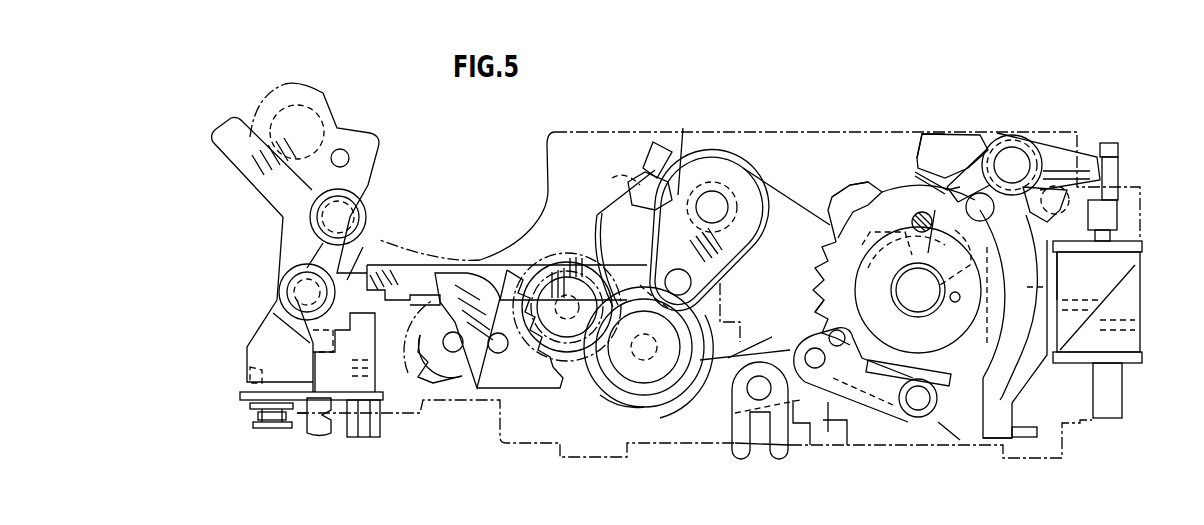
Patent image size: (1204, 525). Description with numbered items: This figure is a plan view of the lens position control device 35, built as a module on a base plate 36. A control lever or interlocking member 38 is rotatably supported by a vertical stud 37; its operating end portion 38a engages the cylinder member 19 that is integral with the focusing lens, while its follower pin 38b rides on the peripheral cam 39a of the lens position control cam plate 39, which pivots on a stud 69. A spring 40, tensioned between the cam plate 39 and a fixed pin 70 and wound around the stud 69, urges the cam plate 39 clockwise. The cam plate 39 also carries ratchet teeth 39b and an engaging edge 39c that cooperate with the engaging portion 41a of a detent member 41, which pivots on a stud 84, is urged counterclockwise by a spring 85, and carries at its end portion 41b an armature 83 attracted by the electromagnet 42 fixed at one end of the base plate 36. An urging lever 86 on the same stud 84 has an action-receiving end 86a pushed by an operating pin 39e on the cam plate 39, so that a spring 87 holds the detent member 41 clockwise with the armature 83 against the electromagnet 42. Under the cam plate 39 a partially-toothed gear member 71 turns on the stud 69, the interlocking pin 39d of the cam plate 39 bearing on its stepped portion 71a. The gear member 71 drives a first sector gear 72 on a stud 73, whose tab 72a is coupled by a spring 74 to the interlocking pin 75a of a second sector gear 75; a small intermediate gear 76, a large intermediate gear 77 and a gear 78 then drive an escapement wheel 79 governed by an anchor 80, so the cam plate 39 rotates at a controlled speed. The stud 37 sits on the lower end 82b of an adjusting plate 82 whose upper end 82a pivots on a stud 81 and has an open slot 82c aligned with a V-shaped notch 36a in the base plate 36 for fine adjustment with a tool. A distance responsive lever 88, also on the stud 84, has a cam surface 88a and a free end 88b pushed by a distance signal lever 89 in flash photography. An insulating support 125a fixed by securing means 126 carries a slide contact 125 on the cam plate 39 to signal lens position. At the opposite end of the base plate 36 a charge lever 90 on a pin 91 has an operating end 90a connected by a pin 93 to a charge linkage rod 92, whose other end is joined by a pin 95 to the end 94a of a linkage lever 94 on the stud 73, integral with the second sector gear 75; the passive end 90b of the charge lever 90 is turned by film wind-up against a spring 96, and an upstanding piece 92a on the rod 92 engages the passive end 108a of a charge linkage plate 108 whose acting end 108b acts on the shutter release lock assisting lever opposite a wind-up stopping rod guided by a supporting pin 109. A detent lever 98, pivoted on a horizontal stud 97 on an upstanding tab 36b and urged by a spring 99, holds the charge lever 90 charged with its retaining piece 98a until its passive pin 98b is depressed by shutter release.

The cylinder member 19 is at (738, 325).
The lens position control device 35 is at (940, 424).
The base plate 36 is at (693, 442).
The V-shaped notch 36a is at (720, 462).
The upstanding tab 36b is at (258, 380).
The stud 37 is at (803, 400).
The interlocking member 38 is at (847, 422).
The operating end portion 38a is at (692, 406).
The follower pin 38b is at (914, 410).
The lens position control cam plate 39 is at (883, 200).
The peripheral cam 39a is at (937, 405).
The ratchet teeth 39b is at (834, 187).
The engaging edge 39c is at (810, 350).
The interlocking pin 39d is at (1058, 265).
The operating pin 39e is at (955, 215).
The spring 40 is at (905, 250).
The detent member 41 is at (963, 148).
The engaging portion 41a is at (925, 145).
The end portion 41b is at (1115, 160).
The electromagnet 42 is at (1125, 325).
The stud 69 is at (912, 300).
The fixed pin 70 is at (917, 214).
The partially-toothed gear member 71 is at (993, 320).
The stepped portion 71a is at (1047, 287).
The first sector gear 72 is at (773, 205).
The tab 72a is at (645, 160).
The stud 73 is at (714, 195).
The spring 74 is at (683, 128).
The second sector gear 75 is at (598, 218).
The interlocking pin 75a is at (615, 178).
The small diameter intermediate gear 76 is at (640, 368).
The large diameter intermediate gear 77 is at (650, 393).
The gear 78 is at (572, 345).
The escapement wheel 79 is at (567, 362).
The anchor 80 is at (522, 388).
The stud 81 is at (743, 400).
The adjusting plate 82 is at (787, 400).
The upper end 82a is at (760, 440).
The lower end 82b is at (817, 407).
The open slot 82c is at (750, 447).
The armature 83 is at (1117, 216).
The stud 84 is at (1015, 160).
The spring 85 is at (980, 193).
The urging lever 86 is at (1037, 183).
The action-receiving end portion 86a is at (950, 190).
The spring 87 is at (1068, 168).
The distance responsive lever 88 is at (1010, 400).
The cam surface 88a is at (1018, 345).
The free end 88b is at (998, 440).
The distance signal lever 89 is at (1033, 437).
The charge lever 90 is at (297, 232).
The operating end 90a is at (287, 347).
The passive end 90b is at (226, 142).
The pin 91 is at (345, 213).
The charge linkage rod 92 is at (380, 262).
The upstanding piece 92a is at (425, 298).
The pin 93 is at (298, 290).
The linkage lever 94 is at (726, 250).
The end 94a is at (655, 290).
The pin 95 is at (677, 269).
The spring 96 is at (348, 165).
The stud 97 is at (266, 428).
The detent lever 98 is at (240, 396).
The retaining piece 98a is at (367, 368).
The passive pin 98b is at (370, 437).
The spring 99 is at (303, 425).
The charge linkage plate 108 is at (427, 335).
The passive end 108a is at (462, 282).
The acting end 108b is at (433, 390).
The supporting pin 109 is at (453, 352).
The slide contact 125 is at (883, 403).
The insulating support 125a is at (905, 290).
The securing means 126 is at (757, 336).